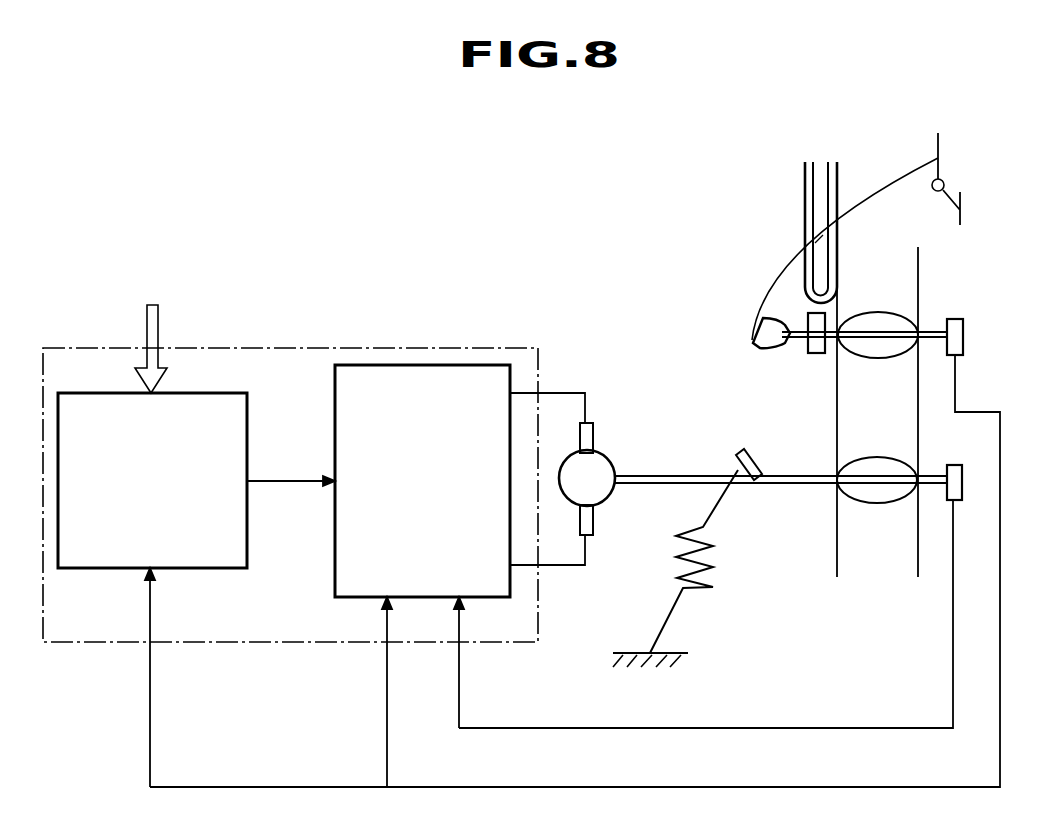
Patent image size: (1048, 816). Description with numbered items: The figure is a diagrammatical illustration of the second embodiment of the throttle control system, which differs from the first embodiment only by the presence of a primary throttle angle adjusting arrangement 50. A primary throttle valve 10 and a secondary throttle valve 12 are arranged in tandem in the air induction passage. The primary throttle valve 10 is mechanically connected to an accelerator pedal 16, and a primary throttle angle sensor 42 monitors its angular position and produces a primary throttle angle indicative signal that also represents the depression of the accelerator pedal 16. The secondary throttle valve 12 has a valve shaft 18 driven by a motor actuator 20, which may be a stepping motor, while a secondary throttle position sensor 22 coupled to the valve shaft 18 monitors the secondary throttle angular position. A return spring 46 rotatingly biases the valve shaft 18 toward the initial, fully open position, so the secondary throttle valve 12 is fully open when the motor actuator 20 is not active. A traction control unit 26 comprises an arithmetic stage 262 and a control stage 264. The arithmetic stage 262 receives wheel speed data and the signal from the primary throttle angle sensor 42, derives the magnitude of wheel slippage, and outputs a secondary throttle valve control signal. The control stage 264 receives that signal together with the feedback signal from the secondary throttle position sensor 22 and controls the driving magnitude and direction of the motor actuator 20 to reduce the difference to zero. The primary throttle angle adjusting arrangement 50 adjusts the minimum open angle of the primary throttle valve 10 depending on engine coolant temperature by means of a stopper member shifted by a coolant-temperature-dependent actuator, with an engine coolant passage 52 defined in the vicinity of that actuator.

The primary throttle valve 10 is at (882, 312).
The secondary throttle valve 12 is at (881, 497).
The accelerator pedal 16 is at (962, 210).
The valve shaft 18 is at (932, 476).
The motor actuator 20 is at (610, 462).
The secondary throttle position sensor 22 is at (963, 485).
The traction control unit 26 is at (312, 348).
The primary throttle angle sensor 42 is at (965, 330).
The return spring 46 is at (710, 560).
The primary throttle angle adjusting arrangement 50 is at (815, 353).
The engine coolant passage 52 is at (805, 200).
The arithmetic stage 262 is at (228, 393).
The control stage 264 is at (458, 365).